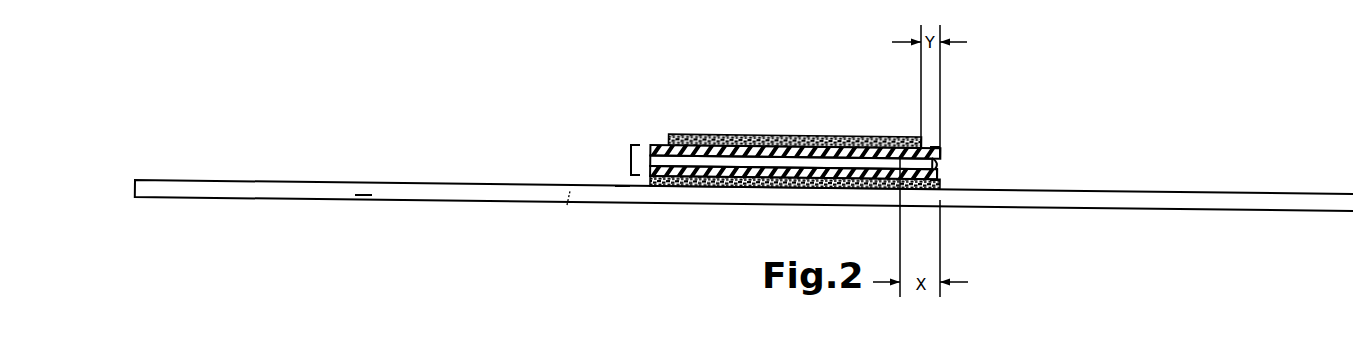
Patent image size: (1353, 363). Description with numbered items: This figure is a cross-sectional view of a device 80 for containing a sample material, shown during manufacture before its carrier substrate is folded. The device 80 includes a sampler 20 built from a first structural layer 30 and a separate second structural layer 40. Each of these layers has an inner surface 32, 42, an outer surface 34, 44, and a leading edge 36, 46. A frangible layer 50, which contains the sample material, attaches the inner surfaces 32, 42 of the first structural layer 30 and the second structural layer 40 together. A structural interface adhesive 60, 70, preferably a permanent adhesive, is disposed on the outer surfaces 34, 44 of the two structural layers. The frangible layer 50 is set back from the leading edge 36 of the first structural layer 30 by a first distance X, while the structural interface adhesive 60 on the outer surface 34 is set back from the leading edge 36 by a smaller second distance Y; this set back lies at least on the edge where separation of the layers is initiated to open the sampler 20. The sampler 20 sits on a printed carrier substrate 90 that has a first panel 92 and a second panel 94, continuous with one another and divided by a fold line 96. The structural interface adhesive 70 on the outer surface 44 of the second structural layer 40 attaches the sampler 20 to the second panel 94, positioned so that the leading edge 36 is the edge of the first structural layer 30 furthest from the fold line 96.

The sampler 20 is at (628, 160).
The first structural layer 30 is at (708, 152).
The inner surface of first structural layer 32 is at (941, 160).
The outer surface of first structural layer 34 is at (935, 138).
The leading edge of first structural layer 36 is at (941, 149).
The second structural layer 40 is at (677, 173).
The inner surface of second structural layer 42 is at (932, 168).
The outer surface of second structural layer 44 is at (938, 178).
The leading edge of second structural layer 46 is at (937, 168).
The frangible layer 50 is at (783, 160).
The structural interface adhesive 60 is at (855, 143).
The structural interface adhesive 70 is at (730, 183).
The device 80 is at (314, 111).
The printed carrier substrate 90 is at (303, 208).
The first panel 92 is at (363, 192).
The second panel 94 is at (622, 195).
The fold line 96 is at (567, 205).